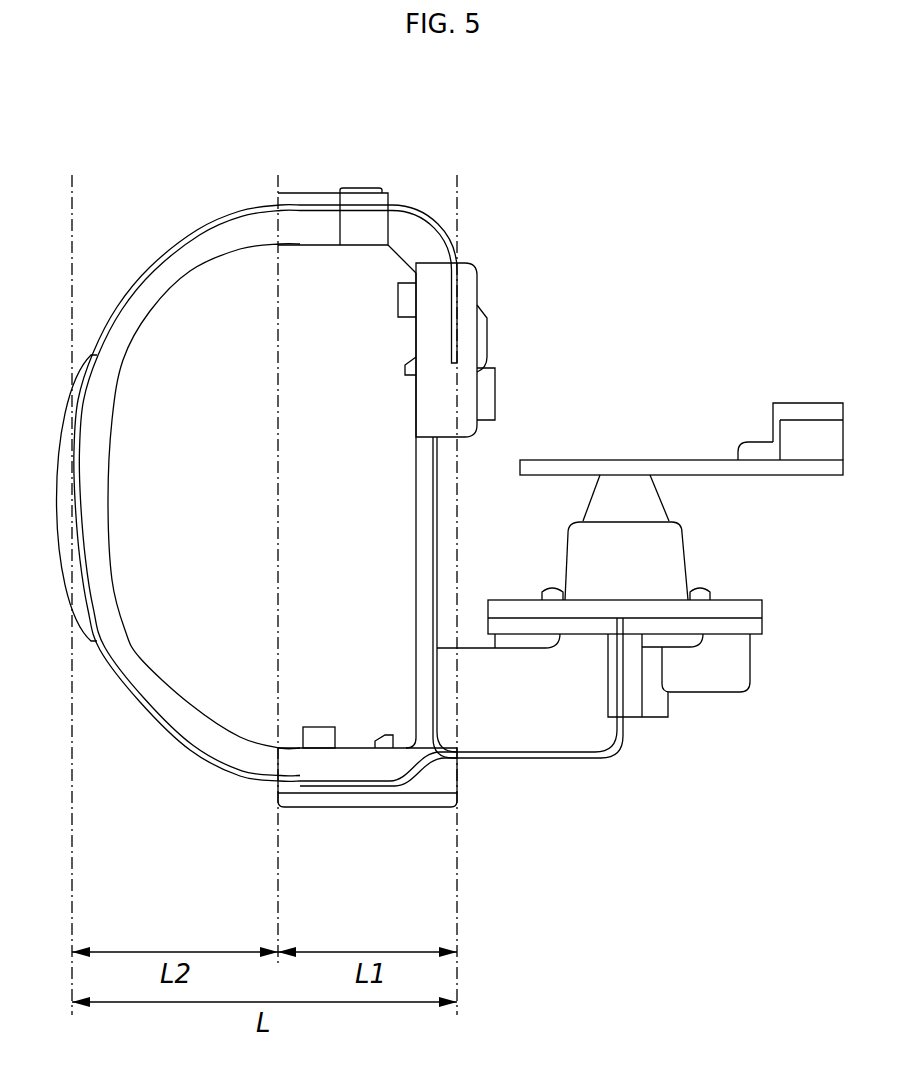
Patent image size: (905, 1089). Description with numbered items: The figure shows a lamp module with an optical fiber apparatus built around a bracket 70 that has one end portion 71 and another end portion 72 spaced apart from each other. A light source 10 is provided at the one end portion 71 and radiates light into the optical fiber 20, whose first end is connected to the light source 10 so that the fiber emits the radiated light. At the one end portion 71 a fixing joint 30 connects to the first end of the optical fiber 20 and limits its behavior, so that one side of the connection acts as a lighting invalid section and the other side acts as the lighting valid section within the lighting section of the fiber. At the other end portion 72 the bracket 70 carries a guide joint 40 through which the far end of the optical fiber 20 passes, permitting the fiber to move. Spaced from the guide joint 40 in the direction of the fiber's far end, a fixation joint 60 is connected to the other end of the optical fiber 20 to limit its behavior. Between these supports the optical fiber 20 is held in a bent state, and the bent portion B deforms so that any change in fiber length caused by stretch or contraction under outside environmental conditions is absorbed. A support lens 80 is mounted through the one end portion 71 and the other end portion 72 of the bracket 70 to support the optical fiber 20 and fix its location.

The light source 10 is at (663, 558).
The optical fiber 20 is at (388, 786).
The fixing joint 30 is at (327, 800).
The guide joint 40 is at (362, 188).
The fixation joint 60 is at (463, 353).
The bracket 70 is at (425, 567).
The one end portion 71 is at (423, 702).
The other end portion 72 is at (398, 242).
The support lens 80 is at (197, 255).
The bent portion B is at (443, 230).